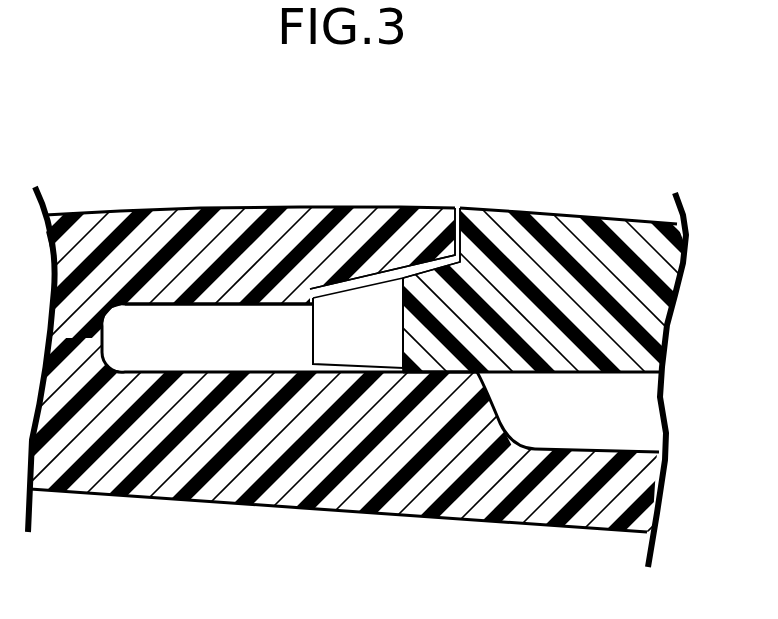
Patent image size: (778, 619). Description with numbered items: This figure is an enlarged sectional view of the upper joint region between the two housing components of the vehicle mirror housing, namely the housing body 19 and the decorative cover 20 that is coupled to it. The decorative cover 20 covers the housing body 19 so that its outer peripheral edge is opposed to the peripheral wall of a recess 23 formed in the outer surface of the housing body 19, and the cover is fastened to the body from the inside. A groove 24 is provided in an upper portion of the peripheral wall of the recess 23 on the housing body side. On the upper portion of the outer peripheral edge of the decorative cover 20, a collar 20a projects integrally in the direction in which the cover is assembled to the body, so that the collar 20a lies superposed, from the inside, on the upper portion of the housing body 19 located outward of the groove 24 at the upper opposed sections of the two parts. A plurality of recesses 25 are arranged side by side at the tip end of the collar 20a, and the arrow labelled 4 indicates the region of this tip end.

The housing body 19 is at (123, 257).
The decorative cover 20 is at (593, 247).
The collar 20a is at (368, 282).
The seal portion 4 is at (292, 285).
The recess 23 is at (497, 425).
The groove 24 is at (197, 372).
The recesses 25 is at (359, 325).